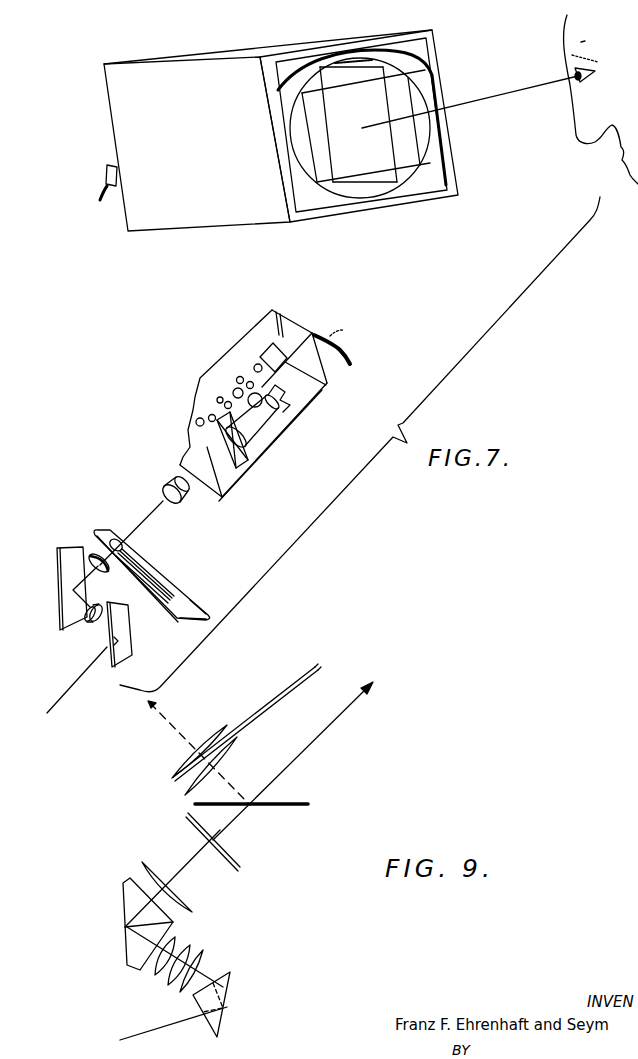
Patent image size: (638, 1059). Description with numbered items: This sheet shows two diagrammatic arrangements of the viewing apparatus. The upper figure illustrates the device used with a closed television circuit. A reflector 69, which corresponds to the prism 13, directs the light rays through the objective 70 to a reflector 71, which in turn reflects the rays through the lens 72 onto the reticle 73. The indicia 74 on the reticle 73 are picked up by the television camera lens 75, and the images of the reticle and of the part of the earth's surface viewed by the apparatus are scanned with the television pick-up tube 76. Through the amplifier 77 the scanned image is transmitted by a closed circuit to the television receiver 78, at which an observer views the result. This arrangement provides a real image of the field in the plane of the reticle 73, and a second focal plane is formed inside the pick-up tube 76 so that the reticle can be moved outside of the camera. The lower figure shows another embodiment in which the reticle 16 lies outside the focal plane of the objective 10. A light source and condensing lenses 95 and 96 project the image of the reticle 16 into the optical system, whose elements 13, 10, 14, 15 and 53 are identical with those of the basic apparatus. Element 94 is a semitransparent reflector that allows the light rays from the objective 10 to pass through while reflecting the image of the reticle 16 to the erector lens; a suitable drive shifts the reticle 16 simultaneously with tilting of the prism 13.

In FIG. 7, the television receiver 78 is at (328, 217).
In FIG. 7, the amplifier 77 is at (228, 390).
In FIG. 7, the television pick-up tube 76 is at (235, 447).
In FIG. 7, the television camera lens 75 is at (160, 500).
In FIG. 7, the lens 72 is at (93, 553).
In FIG. 7, the indicia 74 is at (150, 562).
In FIG. 7, the reticle 73 is at (190, 590).
In FIG. 7, the reflector 71 is at (63, 608).
In FIG. 7, the objective 70 is at (93, 623).
In FIG. 7, the reflector 69 is at (125, 647).
In FIG. 9, the reticle 16 is at (310, 678).
In FIG. 9, the condensing lens 95 is at (208, 737).
In FIG. 9, the condensing lens 96 is at (233, 747).
In FIG. 9, the semitransparent reflector 94 is at (293, 807).
In FIG. 9, the element 53 is at (187, 817).
In FIG. 9, the element 15 is at (142, 865).
In FIG. 9, the element 14 is at (127, 898).
In FIG. 9, the objective 10 is at (185, 940).
In FIG. 9, the prism 13 is at (220, 1017).